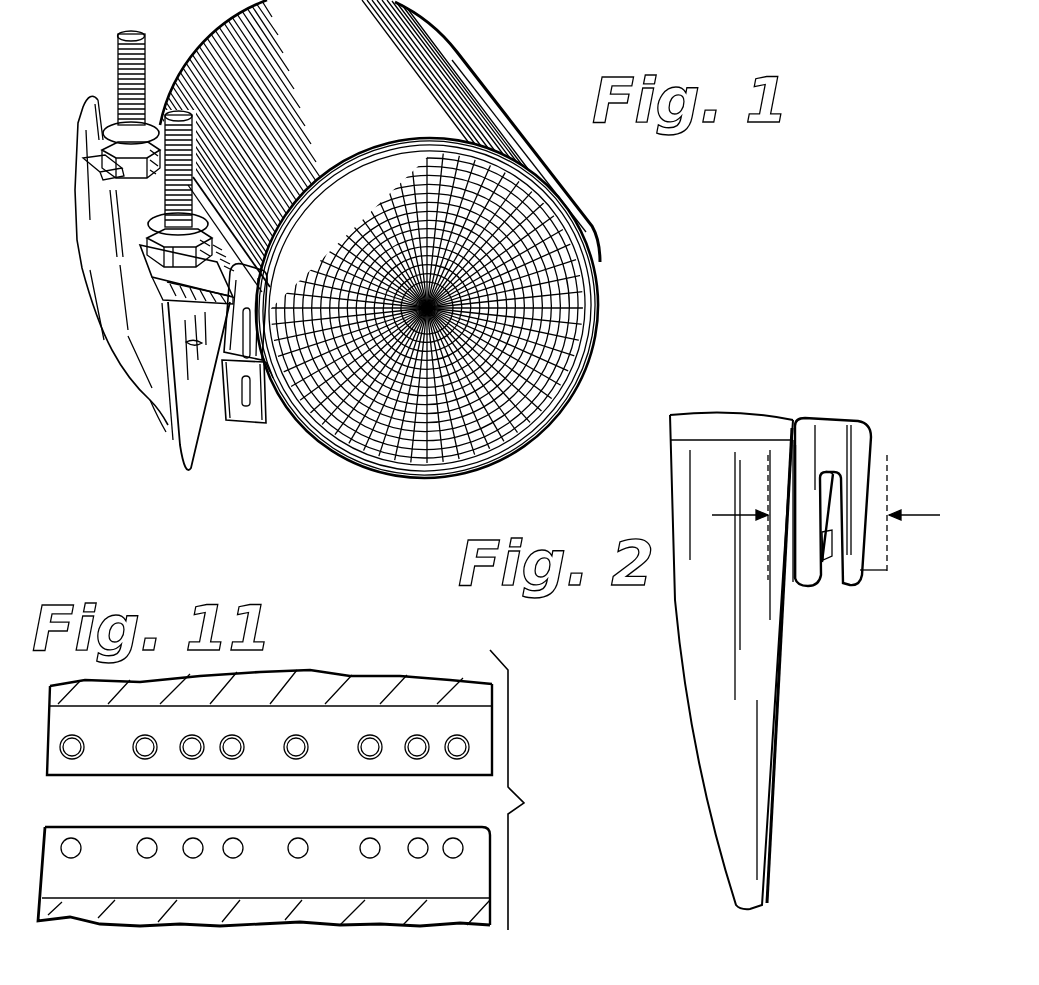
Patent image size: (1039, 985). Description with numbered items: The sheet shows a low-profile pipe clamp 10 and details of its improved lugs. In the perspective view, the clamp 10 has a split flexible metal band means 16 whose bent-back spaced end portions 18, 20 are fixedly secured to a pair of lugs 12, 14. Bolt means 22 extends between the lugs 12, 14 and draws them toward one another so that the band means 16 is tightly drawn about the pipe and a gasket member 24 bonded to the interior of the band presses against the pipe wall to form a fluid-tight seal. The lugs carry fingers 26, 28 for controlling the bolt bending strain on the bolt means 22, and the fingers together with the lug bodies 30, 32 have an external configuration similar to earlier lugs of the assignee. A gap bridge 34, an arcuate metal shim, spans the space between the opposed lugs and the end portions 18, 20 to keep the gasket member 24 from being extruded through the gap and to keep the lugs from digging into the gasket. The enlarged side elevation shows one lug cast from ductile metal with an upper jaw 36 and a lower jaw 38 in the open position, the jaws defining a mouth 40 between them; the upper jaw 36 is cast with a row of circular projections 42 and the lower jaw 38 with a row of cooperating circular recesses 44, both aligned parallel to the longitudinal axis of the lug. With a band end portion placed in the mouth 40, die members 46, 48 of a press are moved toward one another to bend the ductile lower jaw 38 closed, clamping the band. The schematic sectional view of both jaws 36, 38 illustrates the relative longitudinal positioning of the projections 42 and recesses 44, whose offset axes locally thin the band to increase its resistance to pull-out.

In FIG. 1, the pipe clamp 10 is at (572, 62).
In FIG. 1, the lug 12 is at (247, 260).
In FIG. 2, the lug 12 is at (745, 404).
In FIG. 1, the lug 14 is at (253, 424).
In FIG. 1, the split flexible metal band means 16 is at (353, 462).
In FIG. 1, the end portion 18 is at (227, 343).
In FIG. 1, the end portion 20 is at (226, 400).
In FIG. 1, the bolt means 22 is at (118, 92).
In FIG. 1, the gasket member 24 is at (513, 403).
In FIG. 1, the finger 26 is at (171, 447).
In FIG. 2, the finger 26 is at (690, 742).
In FIG. 1, the finger 28 is at (80, 142).
In FIG. 1, the body 30 is at (242, 262).
In FIG. 1, the body 32 is at (268, 418).
In FIG. 1, the gap bridge 34 is at (308, 182).
In FIG. 2, the upper jaw 36 is at (803, 590).
In FIG. 11, the upper jaw 36 is at (294, 891).
In FIG. 2, the lower jaw 38 is at (853, 590).
In FIG. 11, the lower jaw 38 is at (302, 737).
In FIG. 2, the mouth 40 is at (838, 575).
In FIG. 2, the projections 42 is at (775, 455).
In FIG. 11, the projections 42 is at (453, 856).
In FIG. 2, the recesses 44 is at (841, 498).
In FIG. 11, the recesses 44 is at (460, 755).
In FIG. 2, the die member 46 is at (768, 560).
In FIG. 2, the die member 48 is at (892, 510).